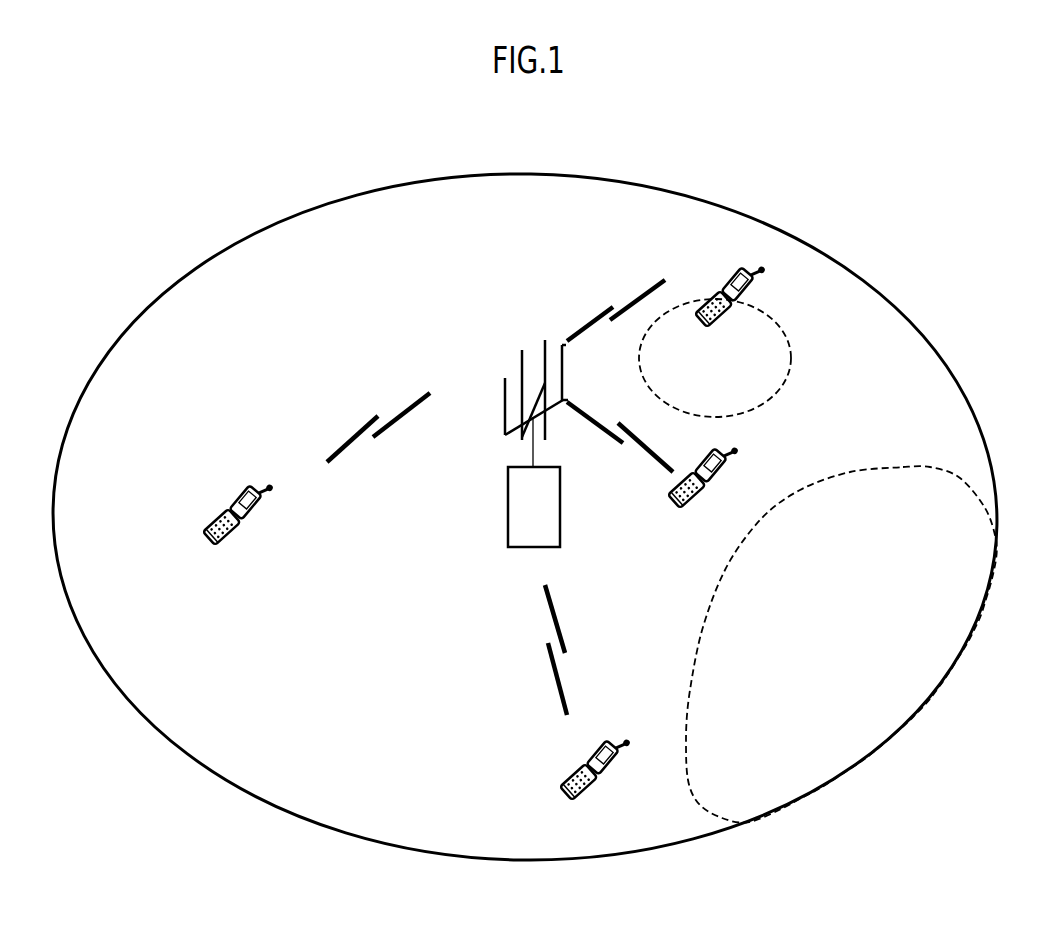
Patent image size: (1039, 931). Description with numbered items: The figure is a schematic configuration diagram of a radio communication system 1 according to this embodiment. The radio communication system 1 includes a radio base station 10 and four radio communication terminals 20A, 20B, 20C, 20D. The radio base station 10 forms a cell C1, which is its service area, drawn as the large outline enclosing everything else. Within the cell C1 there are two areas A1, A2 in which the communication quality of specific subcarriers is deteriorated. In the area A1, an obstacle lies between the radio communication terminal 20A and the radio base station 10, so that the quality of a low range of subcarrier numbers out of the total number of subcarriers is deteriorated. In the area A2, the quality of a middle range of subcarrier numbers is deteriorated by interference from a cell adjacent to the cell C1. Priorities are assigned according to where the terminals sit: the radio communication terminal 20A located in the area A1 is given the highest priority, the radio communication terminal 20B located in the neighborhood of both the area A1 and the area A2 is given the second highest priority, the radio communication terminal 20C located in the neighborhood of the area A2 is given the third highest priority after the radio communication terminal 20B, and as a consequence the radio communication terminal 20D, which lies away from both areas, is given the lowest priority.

The radio communication system 1 is at (583, 141).
The cell C1 is at (718, 197).
The radio base station 10 is at (508, 494).
The radio communication terminal 20A is at (727, 277).
The radio communication terminal 20B is at (718, 476).
The radio communication terminal 20C is at (574, 773).
The radio communication terminal 20D is at (226, 520).
The area A1 is at (790, 343).
The area A2 is at (880, 467).